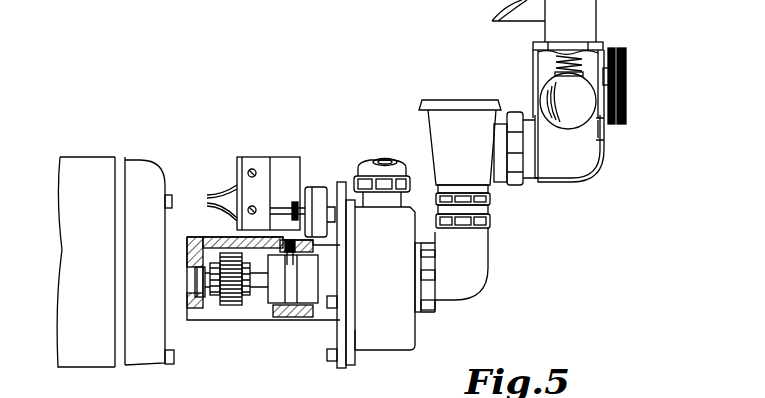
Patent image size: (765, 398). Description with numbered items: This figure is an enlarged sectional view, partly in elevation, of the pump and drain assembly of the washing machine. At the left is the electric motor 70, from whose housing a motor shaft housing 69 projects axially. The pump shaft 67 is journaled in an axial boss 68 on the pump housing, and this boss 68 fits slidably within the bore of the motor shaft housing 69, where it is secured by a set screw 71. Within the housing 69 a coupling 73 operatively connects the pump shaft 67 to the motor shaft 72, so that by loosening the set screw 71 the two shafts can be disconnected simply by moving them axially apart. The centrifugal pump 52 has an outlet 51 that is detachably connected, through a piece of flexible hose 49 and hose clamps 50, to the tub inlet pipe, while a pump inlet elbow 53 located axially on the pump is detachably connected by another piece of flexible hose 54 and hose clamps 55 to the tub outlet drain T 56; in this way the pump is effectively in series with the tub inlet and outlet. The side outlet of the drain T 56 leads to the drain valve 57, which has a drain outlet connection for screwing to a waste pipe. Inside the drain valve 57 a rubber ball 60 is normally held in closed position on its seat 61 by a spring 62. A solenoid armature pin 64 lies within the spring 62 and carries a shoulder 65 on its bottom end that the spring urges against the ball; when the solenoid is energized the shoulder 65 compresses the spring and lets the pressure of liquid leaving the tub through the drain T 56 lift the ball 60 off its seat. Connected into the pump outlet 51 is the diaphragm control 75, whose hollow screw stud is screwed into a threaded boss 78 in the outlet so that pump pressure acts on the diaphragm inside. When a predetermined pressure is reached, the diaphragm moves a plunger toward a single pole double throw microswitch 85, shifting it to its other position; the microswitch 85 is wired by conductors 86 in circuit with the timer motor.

The flexible hose 49 is at (387, 161).
The hose clamps 50 is at (362, 177).
The pump outlet 51 is at (390, 200).
The centrifugal pump 52 is at (380, 355).
The pump inlet elbow 53 is at (490, 268).
The flexible hose 54 is at (488, 211).
The hose clamps 55 is at (490, 199).
The tub outlet drain T 56 is at (436, 128).
The drain valve 57 is at (600, 166).
The ball 60 is at (545, 95).
The seat 61 is at (598, 132).
The spring 62 is at (548, 55).
The armature pin 64 is at (583, 58).
The shoulder 65 is at (578, 76).
The pump shaft 67 is at (262, 290).
The axial boss 68 is at (310, 295).
The motor shaft housing 69 is at (213, 237).
The electric motor 70 is at (89, 168).
The set screw 71 is at (290, 265).
The motor shaft 72 is at (199, 292).
The coupling 73 is at (228, 300).
The diaphragm control 75 is at (313, 187).
The threaded boss 78 is at (342, 200).
The microswitch 85 is at (250, 157).
The conductors 86 is at (221, 192).